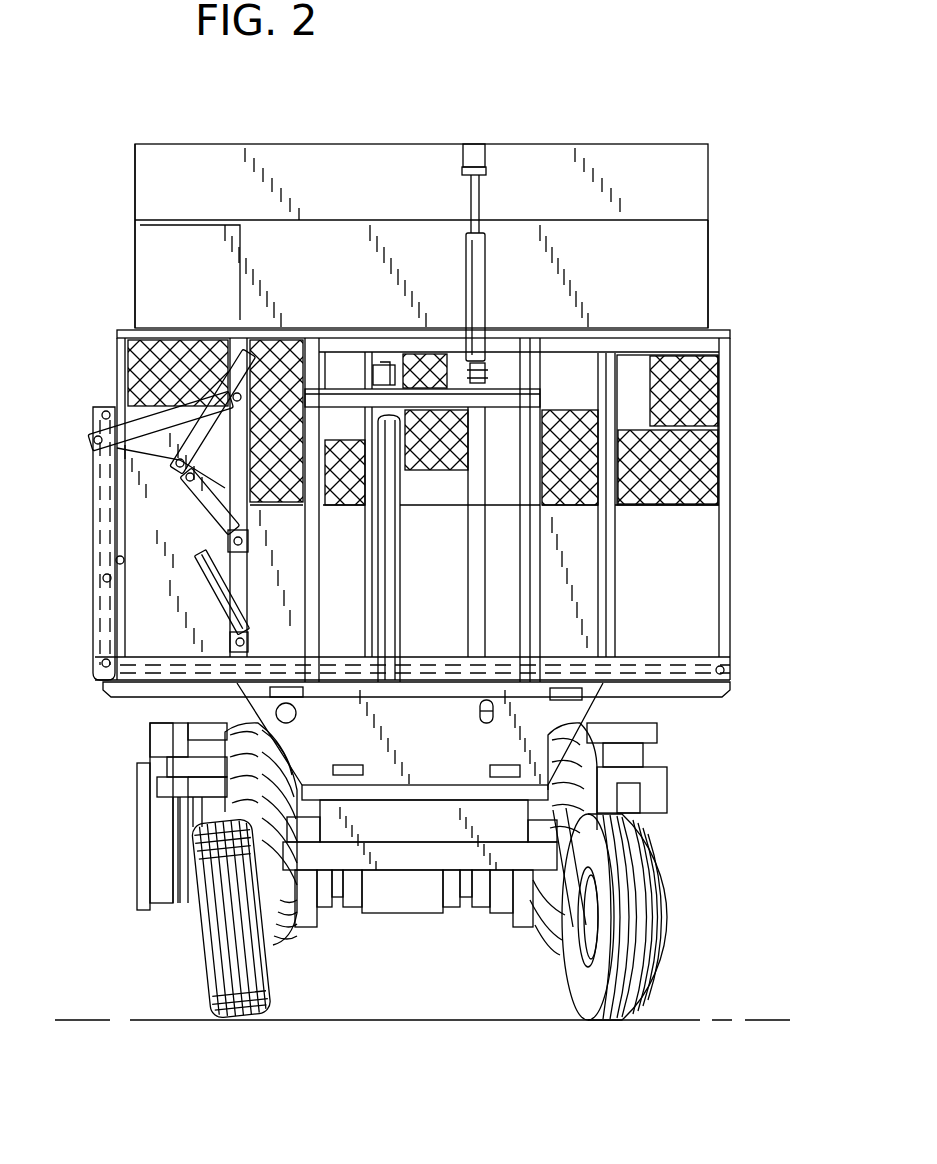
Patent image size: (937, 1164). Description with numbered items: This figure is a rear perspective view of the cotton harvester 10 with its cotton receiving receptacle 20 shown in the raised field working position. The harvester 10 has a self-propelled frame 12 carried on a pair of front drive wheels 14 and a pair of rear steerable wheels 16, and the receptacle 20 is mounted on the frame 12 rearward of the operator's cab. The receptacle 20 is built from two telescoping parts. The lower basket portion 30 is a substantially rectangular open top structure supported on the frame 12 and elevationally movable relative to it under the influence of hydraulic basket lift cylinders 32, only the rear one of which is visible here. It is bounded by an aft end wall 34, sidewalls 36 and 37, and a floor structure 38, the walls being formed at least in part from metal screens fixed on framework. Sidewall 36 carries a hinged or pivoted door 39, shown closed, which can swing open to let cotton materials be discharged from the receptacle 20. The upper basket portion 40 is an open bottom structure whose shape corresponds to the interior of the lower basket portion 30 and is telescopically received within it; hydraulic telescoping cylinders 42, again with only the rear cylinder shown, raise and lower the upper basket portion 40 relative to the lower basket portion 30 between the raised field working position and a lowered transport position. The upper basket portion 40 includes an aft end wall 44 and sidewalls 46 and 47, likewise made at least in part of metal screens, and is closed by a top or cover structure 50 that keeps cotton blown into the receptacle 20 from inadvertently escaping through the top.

The cotton harvester 10 is at (560, 113).
The self-propelled frame 12 is at (418, 897).
The front drive wheels 14 is at (297, 928).
The rear steerable wheels 16 is at (280, 990).
The cotton receiving receptacle 20 is at (777, 191).
The lower basket portion 30 is at (686, 598).
The basket lift cylinders 32 is at (383, 630).
The aft end wall 34 is at (690, 560).
The sidewall 36 is at (117, 378).
The sidewall 37 is at (731, 415).
The floor structure 38 is at (662, 656).
The hinged door 39 is at (95, 522).
The upper basket portion 40 is at (183, 283).
The telescoping cylinders 42 is at (473, 297).
The aft end wall 44 is at (690, 248).
The sidewall 46 is at (135, 250).
The sidewall 47 is at (710, 297).
The top or cover structure 50 is at (344, 143).